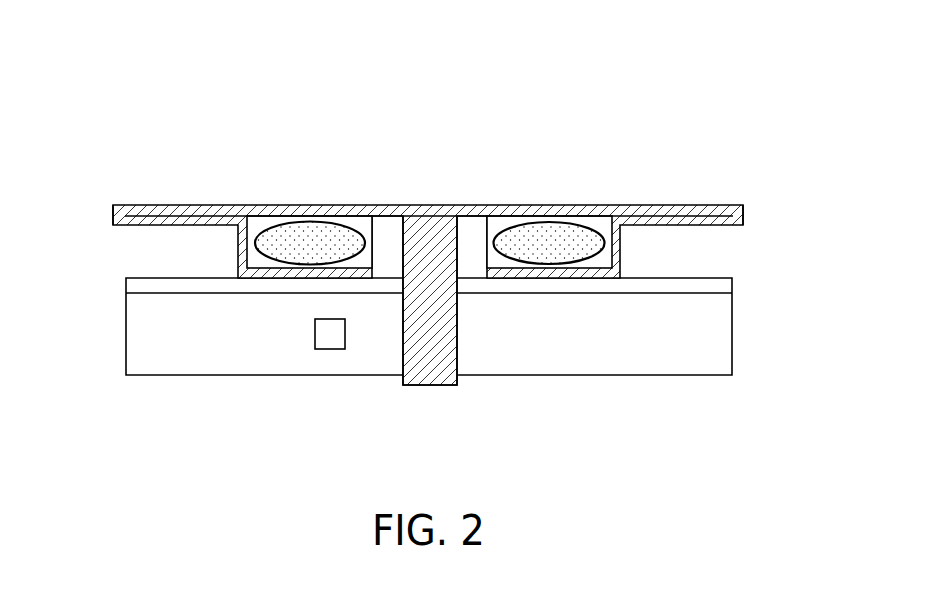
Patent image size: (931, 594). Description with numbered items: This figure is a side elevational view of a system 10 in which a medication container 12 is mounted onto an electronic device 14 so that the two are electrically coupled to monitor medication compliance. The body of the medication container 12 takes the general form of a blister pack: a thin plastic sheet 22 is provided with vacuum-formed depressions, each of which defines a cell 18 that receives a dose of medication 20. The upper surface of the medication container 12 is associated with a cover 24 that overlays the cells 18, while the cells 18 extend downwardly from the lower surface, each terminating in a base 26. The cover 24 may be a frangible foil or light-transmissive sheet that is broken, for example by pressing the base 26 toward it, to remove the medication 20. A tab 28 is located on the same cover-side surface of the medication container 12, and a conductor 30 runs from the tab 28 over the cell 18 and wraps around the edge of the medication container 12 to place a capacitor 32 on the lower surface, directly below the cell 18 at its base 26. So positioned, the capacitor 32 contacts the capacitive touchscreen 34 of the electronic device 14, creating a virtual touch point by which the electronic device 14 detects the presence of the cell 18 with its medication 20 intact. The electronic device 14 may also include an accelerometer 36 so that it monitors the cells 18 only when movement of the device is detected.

The system 10 is at (177, 127).
The medication container 12 is at (433, 203).
The electronic device 14 is at (723, 323).
The cell 18 is at (374, 232).
The medication 20 is at (313, 238).
The plastic sheet 22 is at (718, 206).
The cover 24 is at (512, 205).
The base 26 is at (429, 298).
The tab 28 is at (423, 377).
The conductor 30 is at (113, 210).
The capacitor 32 is at (270, 278).
The capacitive touchscreen 34 is at (728, 285).
The accelerometer 36 is at (328, 349).